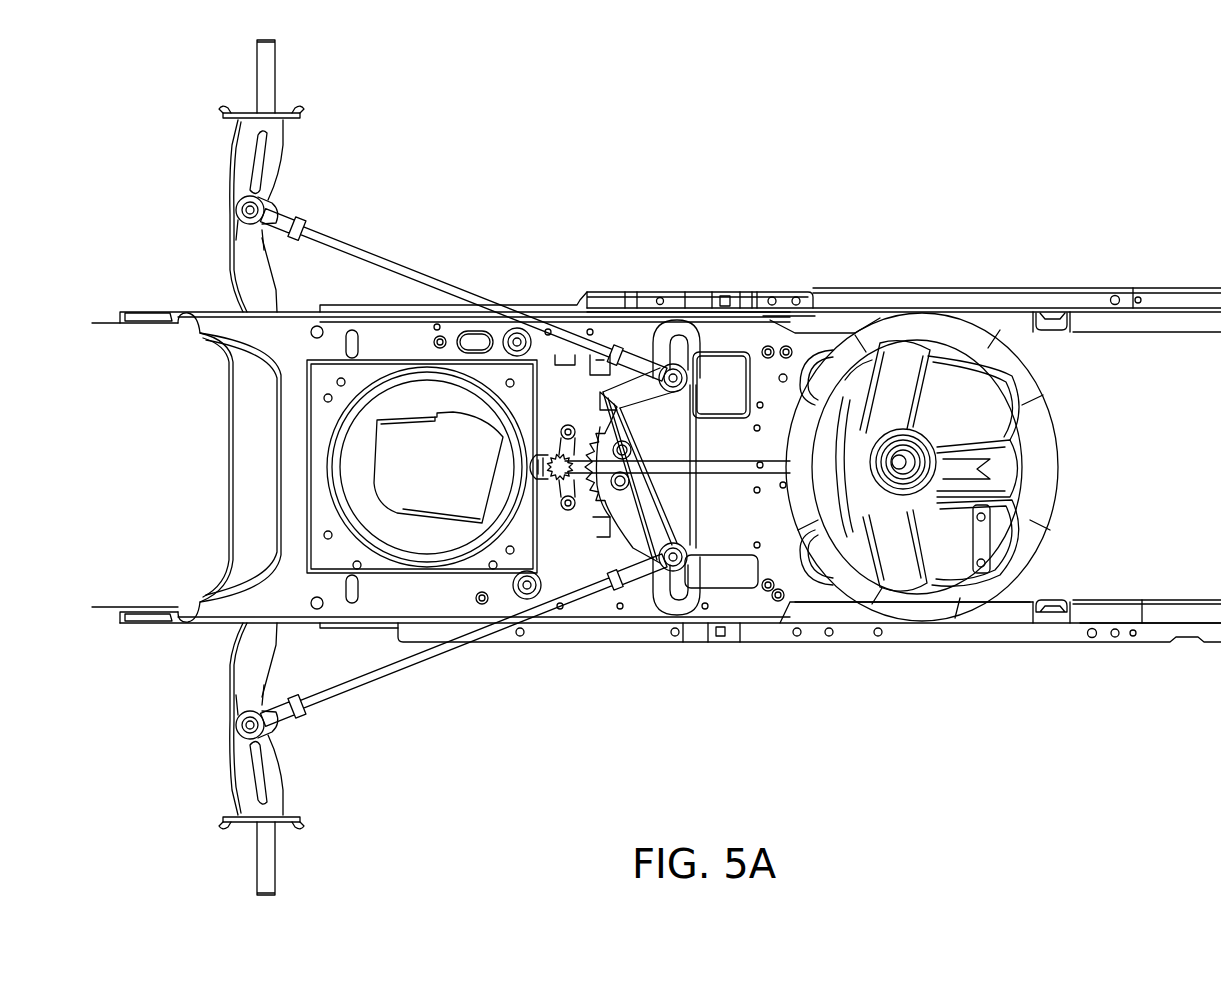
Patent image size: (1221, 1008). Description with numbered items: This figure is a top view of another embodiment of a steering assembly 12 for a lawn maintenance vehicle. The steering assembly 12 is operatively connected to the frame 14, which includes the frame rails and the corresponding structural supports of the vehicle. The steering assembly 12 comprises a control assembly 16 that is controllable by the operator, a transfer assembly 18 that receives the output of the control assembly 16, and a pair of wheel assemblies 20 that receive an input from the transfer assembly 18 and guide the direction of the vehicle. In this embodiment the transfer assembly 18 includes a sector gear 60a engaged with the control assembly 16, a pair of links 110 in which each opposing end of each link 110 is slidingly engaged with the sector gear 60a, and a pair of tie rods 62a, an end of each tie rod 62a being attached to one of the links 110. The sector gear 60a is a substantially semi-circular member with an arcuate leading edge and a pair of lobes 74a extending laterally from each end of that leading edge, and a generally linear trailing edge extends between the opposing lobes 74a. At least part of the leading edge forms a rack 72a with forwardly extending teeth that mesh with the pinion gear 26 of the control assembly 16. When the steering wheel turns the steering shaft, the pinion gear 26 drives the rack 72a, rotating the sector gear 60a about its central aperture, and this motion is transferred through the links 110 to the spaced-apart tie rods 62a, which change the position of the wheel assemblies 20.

The steering assembly 12 is at (752, 340).
The frame 14 is at (1010, 632).
The control assembly 16 is at (835, 600).
The transfer assembly 18 is at (641, 342).
The wheel assemblies 20 is at (314, 145).
The pinion gear 26 is at (548, 480).
The sector gear 60a is at (683, 530).
The tie rods 62a is at (405, 272).
The rack 72a is at (605, 516).
The lobes 74a is at (693, 335).
The links 110 is at (640, 425).